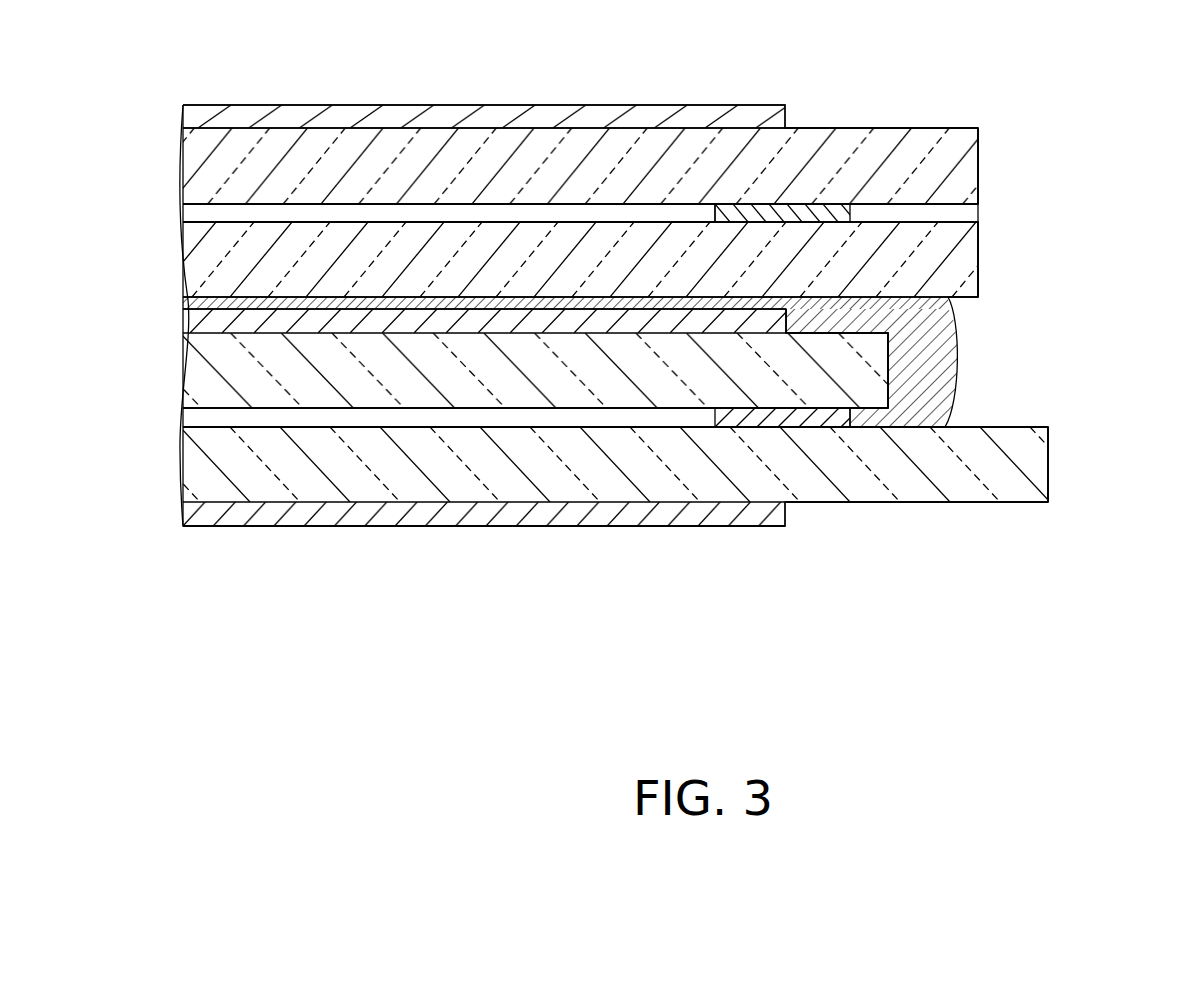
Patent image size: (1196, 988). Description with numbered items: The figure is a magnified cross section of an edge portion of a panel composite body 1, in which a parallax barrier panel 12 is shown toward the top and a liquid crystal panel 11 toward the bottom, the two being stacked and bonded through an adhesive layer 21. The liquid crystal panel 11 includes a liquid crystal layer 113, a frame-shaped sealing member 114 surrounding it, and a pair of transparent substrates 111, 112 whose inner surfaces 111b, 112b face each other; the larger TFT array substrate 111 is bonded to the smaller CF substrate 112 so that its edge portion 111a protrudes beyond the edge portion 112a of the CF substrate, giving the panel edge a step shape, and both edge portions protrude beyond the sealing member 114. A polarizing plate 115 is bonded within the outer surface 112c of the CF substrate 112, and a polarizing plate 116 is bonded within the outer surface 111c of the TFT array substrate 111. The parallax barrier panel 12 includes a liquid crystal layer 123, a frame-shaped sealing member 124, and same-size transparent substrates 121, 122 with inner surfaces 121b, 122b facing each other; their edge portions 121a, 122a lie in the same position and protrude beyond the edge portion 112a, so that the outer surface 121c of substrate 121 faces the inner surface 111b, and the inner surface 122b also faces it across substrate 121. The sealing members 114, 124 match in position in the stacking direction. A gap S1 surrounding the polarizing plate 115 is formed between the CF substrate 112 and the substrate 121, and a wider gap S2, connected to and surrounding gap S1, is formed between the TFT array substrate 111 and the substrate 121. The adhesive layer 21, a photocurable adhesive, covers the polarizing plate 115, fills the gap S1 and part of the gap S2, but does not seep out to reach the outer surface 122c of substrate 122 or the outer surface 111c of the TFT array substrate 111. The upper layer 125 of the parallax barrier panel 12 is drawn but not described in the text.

The panel composite body 1 is at (1084, 598).
The liquid crystal panel 11 is at (993, 526).
The parallax barrier panel 12 is at (1000, 98).
The adhesive layer 21 is at (200, 301).
The TFT array substrate 111 is at (190, 460).
The edge portion of substrate 111 111a is at (1023, 458).
The inner surface of substrate 111 111b is at (593, 427).
The outer surface of substrate 111 111c is at (1032, 503).
The CF substrate 112 is at (192, 375).
The edge portion of substrate 112 112a is at (877, 375).
The inner surface of substrate 112 112b is at (395, 410).
The outer surface of substrate 112 112c is at (877, 322).
The liquid crystal layer 113 is at (190, 415).
The sealing member 114 is at (818, 428).
The polarizing plate 115 is at (190, 320).
The polarizing plate 116 is at (187, 510).
The third substrate 121 is at (205, 263).
The edge portion of substrate 121 121a is at (955, 242).
The inner surface of substrate 121 121b is at (588, 220).
The outer surface of substrate 121 121c is at (962, 297).
The fourth substrate 122 is at (187, 168).
The edge portion of substrate 122 122a is at (962, 160).
The inner surface of substrate 122 122b is at (500, 203).
The outer surface of substrate 122 122c is at (852, 128).
The liquid crystal layer 123 is at (188, 208).
The sealing member 124 is at (780, 212).
The upper layer 125 is at (197, 115).
The gap S1 is at (820, 325).
The gap S2 is at (915, 400).